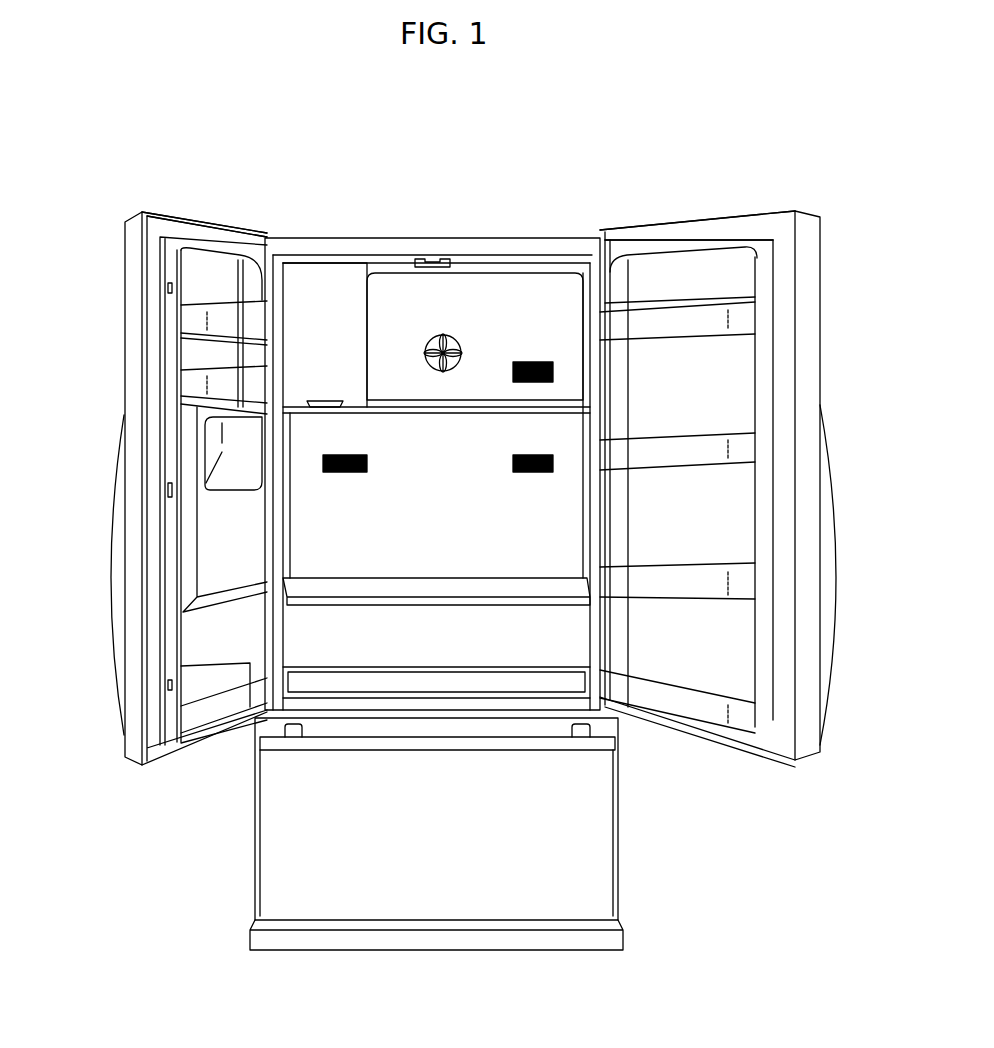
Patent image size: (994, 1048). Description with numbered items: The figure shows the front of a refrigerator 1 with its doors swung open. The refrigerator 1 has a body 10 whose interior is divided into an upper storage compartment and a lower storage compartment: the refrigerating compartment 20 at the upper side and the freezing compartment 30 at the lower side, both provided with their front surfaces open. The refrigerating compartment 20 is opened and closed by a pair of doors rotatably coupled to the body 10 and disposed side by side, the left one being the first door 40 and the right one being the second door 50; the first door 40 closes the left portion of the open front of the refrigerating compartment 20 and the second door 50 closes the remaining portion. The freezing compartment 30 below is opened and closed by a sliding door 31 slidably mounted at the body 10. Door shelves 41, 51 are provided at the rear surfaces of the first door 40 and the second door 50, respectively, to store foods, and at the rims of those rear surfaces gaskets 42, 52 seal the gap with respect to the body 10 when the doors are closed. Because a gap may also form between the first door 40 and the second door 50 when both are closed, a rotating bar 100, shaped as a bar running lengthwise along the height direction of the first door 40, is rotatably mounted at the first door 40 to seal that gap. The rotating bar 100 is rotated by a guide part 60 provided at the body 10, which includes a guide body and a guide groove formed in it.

The refrigerator 1 is at (311, 92).
The body 10 is at (557, 206).
The refrigerating compartment 20 is at (410, 314).
The freezing compartment 30 is at (560, 796).
The sliding door 31 is at (597, 882).
The first door 40 is at (132, 220).
The door shelf 41 is at (195, 388).
The gasket 42 is at (183, 222).
The second door 50 is at (810, 240).
The door shelf 51 is at (740, 450).
The gasket 52 is at (683, 222).
The guide part 60 is at (434, 258).
The rotating bar 100 is at (140, 268).